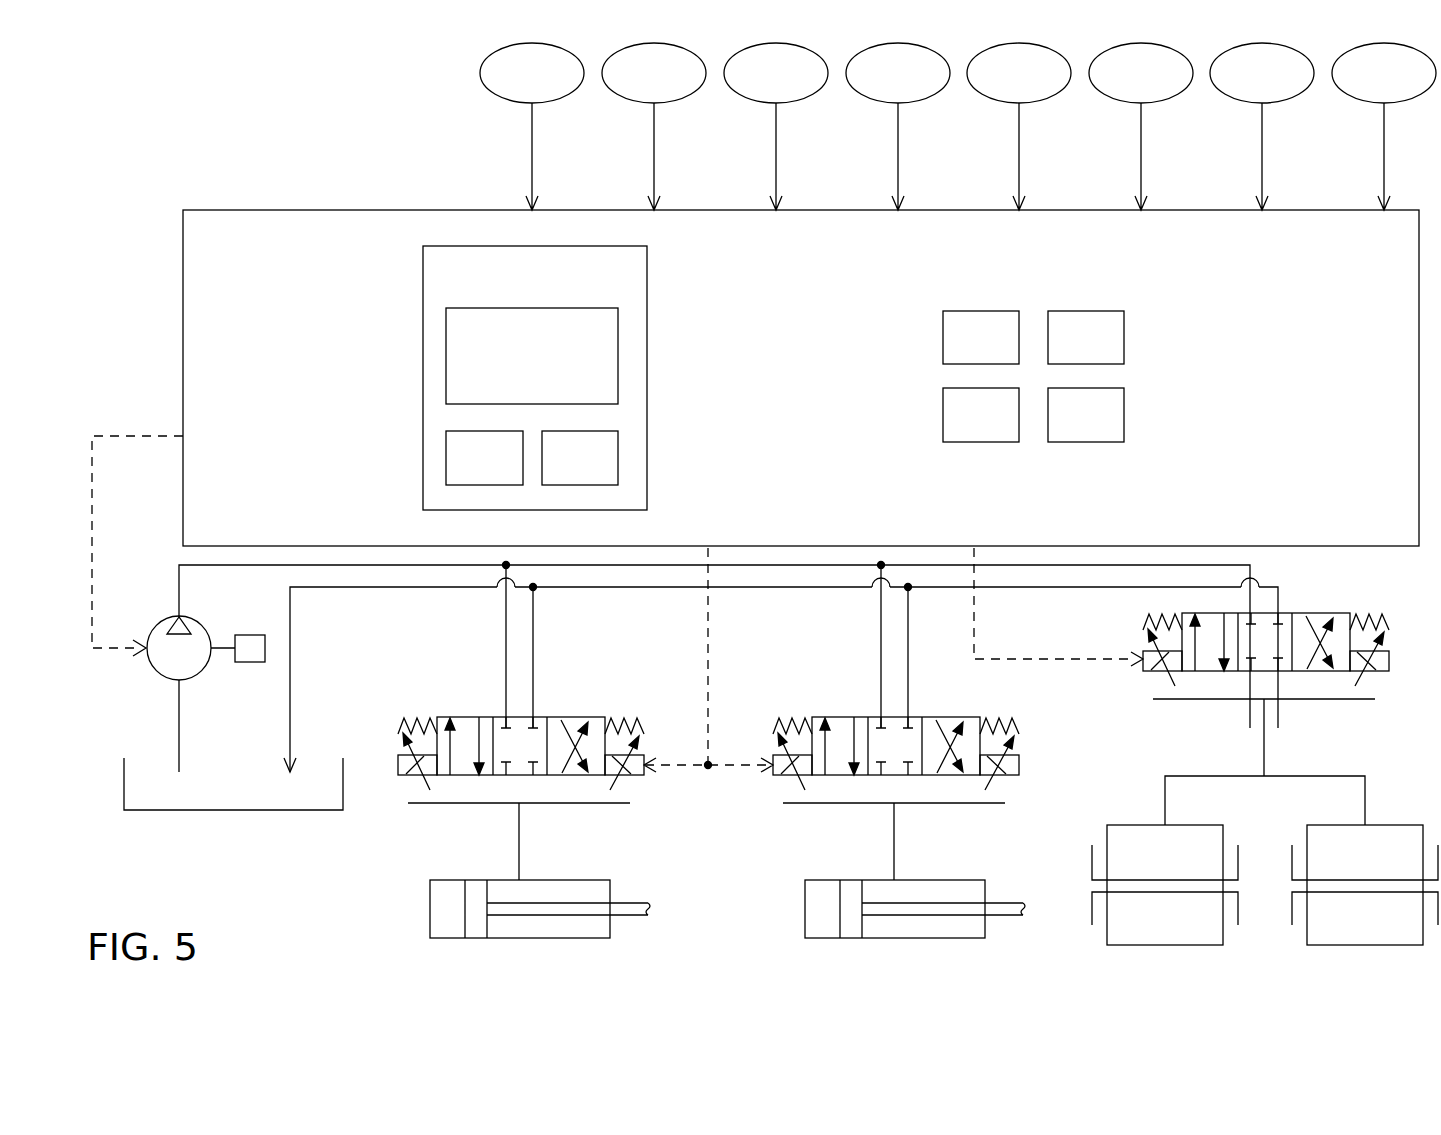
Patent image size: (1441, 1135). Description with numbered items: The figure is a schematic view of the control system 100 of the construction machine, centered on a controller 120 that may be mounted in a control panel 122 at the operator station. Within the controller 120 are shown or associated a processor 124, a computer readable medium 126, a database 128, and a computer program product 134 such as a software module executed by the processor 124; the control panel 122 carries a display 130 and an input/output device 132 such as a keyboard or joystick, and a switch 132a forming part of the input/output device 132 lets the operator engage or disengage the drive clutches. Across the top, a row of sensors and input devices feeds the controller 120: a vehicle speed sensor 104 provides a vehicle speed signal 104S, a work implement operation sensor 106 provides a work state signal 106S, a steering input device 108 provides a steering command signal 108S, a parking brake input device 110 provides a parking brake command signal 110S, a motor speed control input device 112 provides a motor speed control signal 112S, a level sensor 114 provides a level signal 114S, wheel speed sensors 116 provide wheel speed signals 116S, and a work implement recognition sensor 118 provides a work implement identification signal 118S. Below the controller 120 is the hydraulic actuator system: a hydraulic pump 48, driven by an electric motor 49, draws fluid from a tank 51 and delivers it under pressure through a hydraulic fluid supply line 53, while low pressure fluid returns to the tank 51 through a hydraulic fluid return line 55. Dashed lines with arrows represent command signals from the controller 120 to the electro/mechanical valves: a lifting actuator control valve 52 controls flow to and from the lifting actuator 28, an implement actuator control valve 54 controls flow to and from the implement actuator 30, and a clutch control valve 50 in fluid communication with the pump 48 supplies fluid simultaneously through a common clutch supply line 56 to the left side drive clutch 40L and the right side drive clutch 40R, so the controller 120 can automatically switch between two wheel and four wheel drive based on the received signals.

The control system 100 is at (149, 274).
The vehicle speed sensor 104 is at (508, 88).
The work implement operation sensor 106 is at (630, 88).
The steering input device 108 is at (752, 88).
The parking brake input device 110 is at (874, 88).
The motor speed control input device 112 is at (995, 88).
The level sensor 114 is at (1117, 88).
The wheel speed sensors 116 is at (1238, 88).
The work implement recognition sensor 118 is at (1360, 88).
The vehicle speed signal 104S is at (532, 175).
The work state signal 106S is at (654, 175).
The steering command signal 108S is at (776, 175).
The parking brake command signal 110S is at (898, 175).
The motor speed control signal 112S is at (1019, 175).
The level signal 114S is at (1141, 175).
The wheel speed signals 116S is at (1262, 175).
The work implement identification signal 118S is at (1384, 175).
The controller 120 is at (1301, 392).
The control panel 122 is at (503, 289).
The processor 124 is at (957, 349).
The computer readable medium 126 is at (1062, 349).
The database 128 is at (957, 428).
The display 130 is at (503, 369).
The input/output device 132 is at (556, 471).
The switch 132a is at (453, 471).
The computer program product 134 is at (1062, 428).
The hydraulic pump 48 is at (151, 672).
The electric motor 49 is at (252, 664).
The control valve 50 is at (1288, 612).
The tank 51 is at (217, 812).
The lifting actuator control valve 52 is at (498, 715).
The hydraulic fluid supply line 53 is at (193, 564).
The implement actuator control valve 54 is at (873, 716).
The hydraulic fluid return line 55 is at (375, 588).
The common clutch supply line 56 is at (1297, 775).
The lifting actuator 28 is at (585, 880).
The implement actuator 30 is at (960, 880).
The left side drive clutch 40L is at (1124, 825).
The right side drive clutch 40R is at (1410, 825).